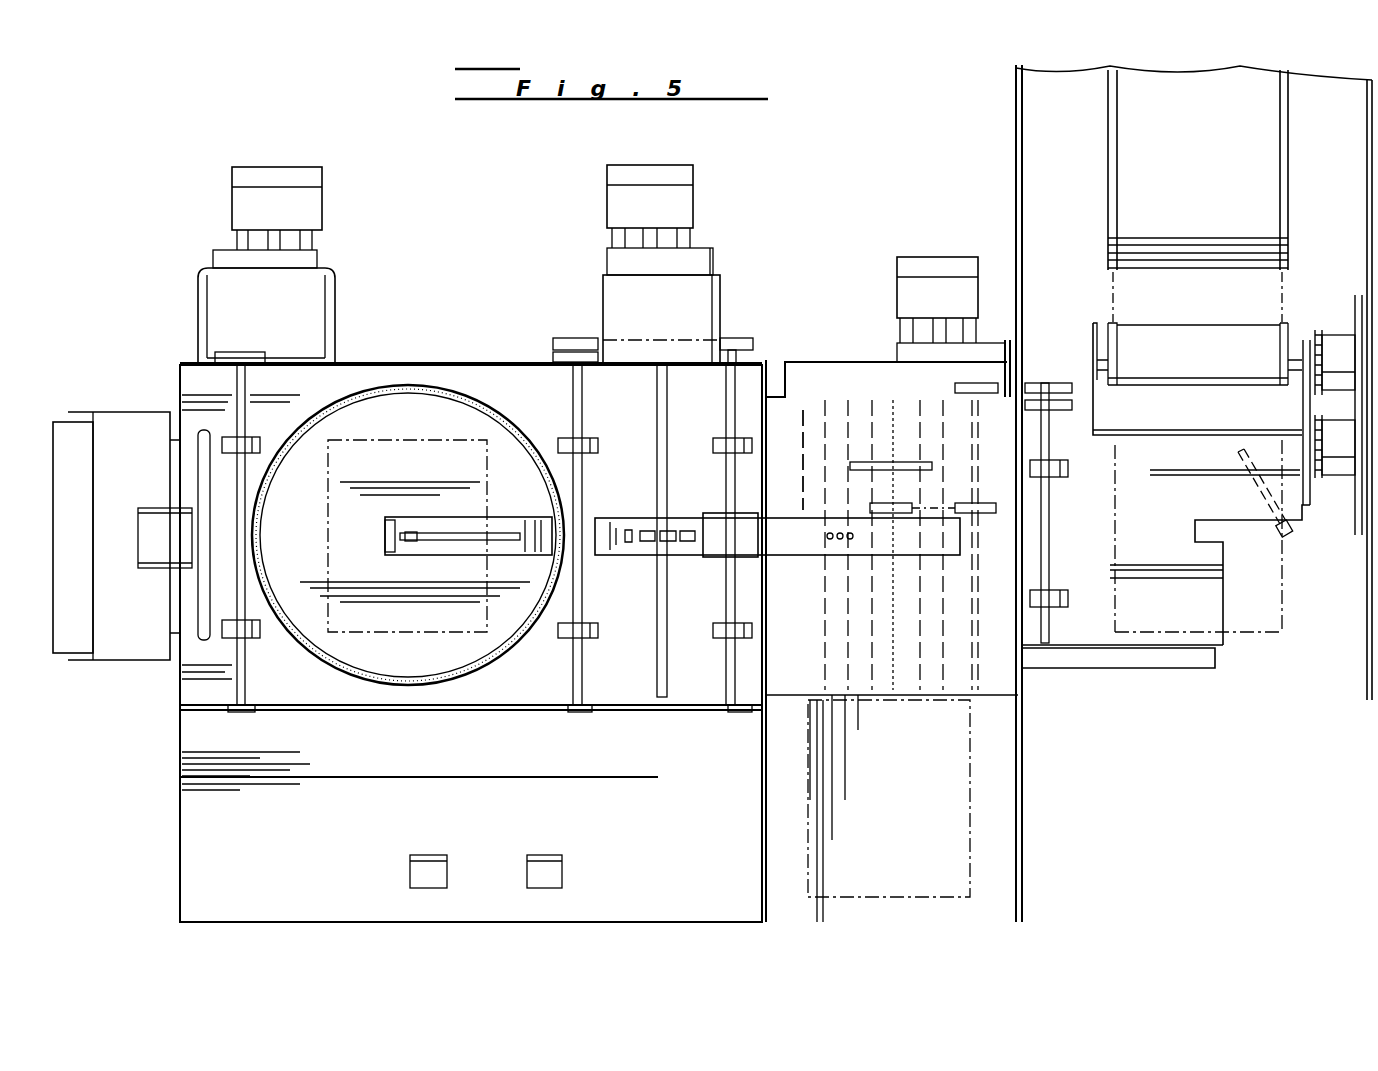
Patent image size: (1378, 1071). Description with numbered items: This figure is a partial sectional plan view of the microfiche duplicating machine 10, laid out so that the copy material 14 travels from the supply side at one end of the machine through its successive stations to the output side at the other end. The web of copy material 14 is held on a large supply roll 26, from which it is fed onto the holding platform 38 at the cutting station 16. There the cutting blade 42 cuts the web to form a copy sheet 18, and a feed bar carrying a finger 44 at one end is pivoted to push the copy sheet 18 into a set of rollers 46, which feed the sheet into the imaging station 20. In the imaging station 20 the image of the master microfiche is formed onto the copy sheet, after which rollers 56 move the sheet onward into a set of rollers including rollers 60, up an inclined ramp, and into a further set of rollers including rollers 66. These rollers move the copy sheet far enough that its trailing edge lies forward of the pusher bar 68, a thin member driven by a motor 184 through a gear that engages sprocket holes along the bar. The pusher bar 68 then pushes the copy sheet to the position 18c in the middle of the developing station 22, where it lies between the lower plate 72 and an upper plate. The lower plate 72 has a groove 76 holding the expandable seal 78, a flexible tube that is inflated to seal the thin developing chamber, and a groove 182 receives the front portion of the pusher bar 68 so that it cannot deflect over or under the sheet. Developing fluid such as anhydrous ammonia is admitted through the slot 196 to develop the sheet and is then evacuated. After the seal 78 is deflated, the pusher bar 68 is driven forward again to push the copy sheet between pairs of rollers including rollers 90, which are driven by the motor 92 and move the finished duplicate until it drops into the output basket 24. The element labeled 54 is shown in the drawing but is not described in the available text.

The microfiche duplicating machine 10 is at (915, 192).
The copy material 14 is at (1112, 285).
The cutting station 16 is at (1006, 282).
The copy sheet 18 is at (1238, 632).
The copy sheet position 18c is at (462, 440).
The imaging station 20 is at (840, 380).
The developing station 22 is at (437, 405).
The output basket 24 is at (115, 440).
The supply roll 26 is at (1202, 175).
The holding platform 38 is at (1152, 530).
The cutting blade 42 is at (1211, 427).
The finger 44 is at (1290, 533).
The rollers 46 is at (1068, 610).
The guide 54 is at (815, 415).
The rollers 56 is at (865, 612).
The rollers 60 is at (713, 638).
The rollers 66 is at (558, 640).
The pusher bar 68 is at (777, 535).
The lower plate 72 is at (632, 498).
The groove 76 is at (345, 688).
The expandable seal 78 is at (412, 690).
The rollers 90 is at (228, 640).
The motor 92 is at (300, 327).
The groove 182 is at (527, 526).
The motor 184 is at (897, 272).
The slot 196 is at (400, 537).